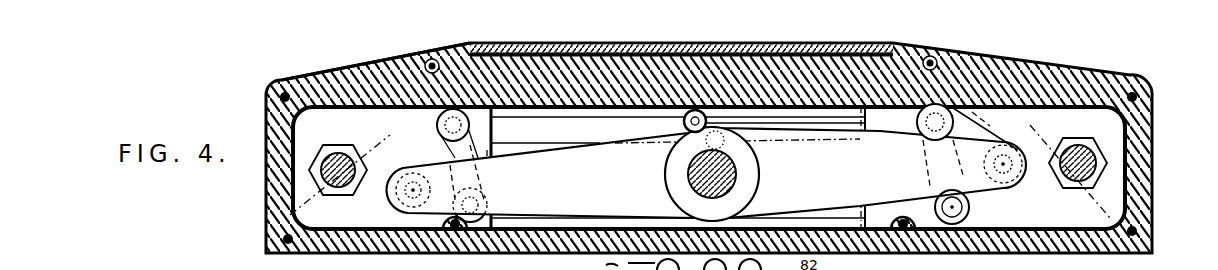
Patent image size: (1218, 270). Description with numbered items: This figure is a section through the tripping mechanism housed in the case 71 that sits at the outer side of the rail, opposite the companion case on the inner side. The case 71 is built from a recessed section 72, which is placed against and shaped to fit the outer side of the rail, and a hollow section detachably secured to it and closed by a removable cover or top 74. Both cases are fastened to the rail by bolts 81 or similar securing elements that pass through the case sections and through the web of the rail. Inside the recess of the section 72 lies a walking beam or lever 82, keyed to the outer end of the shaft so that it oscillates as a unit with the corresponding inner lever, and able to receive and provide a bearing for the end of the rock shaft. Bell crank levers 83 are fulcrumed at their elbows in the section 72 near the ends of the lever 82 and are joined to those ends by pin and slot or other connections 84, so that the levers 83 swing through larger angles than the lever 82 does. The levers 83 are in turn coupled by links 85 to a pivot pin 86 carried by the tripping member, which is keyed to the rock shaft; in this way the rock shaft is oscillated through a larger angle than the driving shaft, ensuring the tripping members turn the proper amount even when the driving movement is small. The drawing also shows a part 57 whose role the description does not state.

The case 71 is at (270, 75).
The recessed section 72 is at (368, 70).
The removable cover or top 74 is at (902, 47).
The bolts 81 is at (322, 173).
The walking beam or lever 82 is at (706, 174).
The bell crank levers 83 is at (452, 148).
The pin and slot connections 84 is at (393, 200).
The links 85 is at (532, 132).
The pivot pin 86 is at (690, 130).
The shaft 57 is at (688, 175).